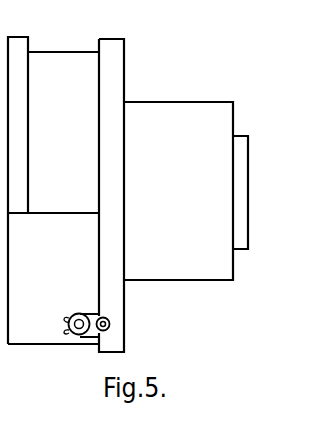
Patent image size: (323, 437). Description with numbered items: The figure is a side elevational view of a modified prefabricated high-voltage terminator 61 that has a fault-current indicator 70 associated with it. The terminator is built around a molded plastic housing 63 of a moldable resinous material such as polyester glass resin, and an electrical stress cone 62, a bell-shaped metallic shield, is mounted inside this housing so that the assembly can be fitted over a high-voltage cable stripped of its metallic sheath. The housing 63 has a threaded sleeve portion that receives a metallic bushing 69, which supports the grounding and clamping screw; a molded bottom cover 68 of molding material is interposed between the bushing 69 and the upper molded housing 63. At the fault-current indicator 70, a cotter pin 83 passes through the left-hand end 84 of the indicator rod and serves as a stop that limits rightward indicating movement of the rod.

The prefabricated high-voltage terminator 61 is at (167, 73).
The electrical stress cone 62 is at (248, 201).
The molded plastic housing 63 is at (56, 60).
The molded bottom cover 68 is at (117, 342).
The metallic bushing 69 is at (215, 283).
The fault-current indicator 70 is at (82, 313).
The cotter pin 83 is at (110, 323).
The left-hand end of the indicator rod 84 is at (78, 338).